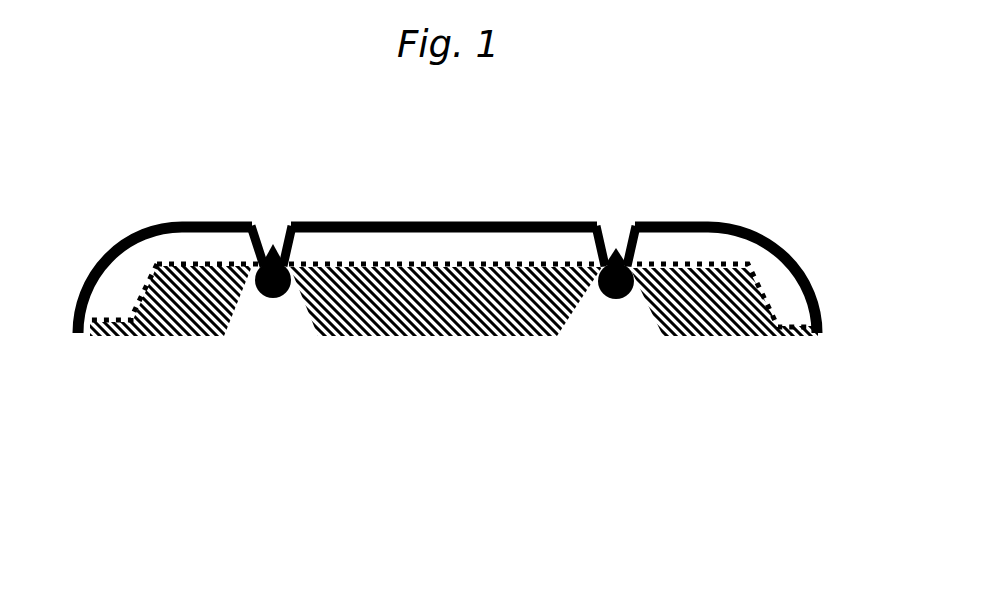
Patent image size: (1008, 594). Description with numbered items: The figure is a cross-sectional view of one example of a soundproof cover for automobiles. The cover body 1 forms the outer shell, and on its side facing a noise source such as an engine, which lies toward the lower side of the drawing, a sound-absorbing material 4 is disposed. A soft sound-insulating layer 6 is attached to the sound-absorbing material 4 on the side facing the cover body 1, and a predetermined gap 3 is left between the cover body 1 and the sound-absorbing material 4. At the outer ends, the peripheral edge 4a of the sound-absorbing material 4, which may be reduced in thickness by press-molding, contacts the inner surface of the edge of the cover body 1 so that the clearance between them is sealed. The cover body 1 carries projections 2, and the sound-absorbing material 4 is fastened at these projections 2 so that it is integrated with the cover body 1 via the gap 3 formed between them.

The cover body 1 is at (493, 220).
The projection 2 is at (263, 238).
The gap 3 is at (683, 260).
The sound-absorbing material 4 is at (710, 338).
The peripheral edge of sound-absorbing material 4a is at (110, 333).
The soft sound-insulating layer 6 is at (393, 262).